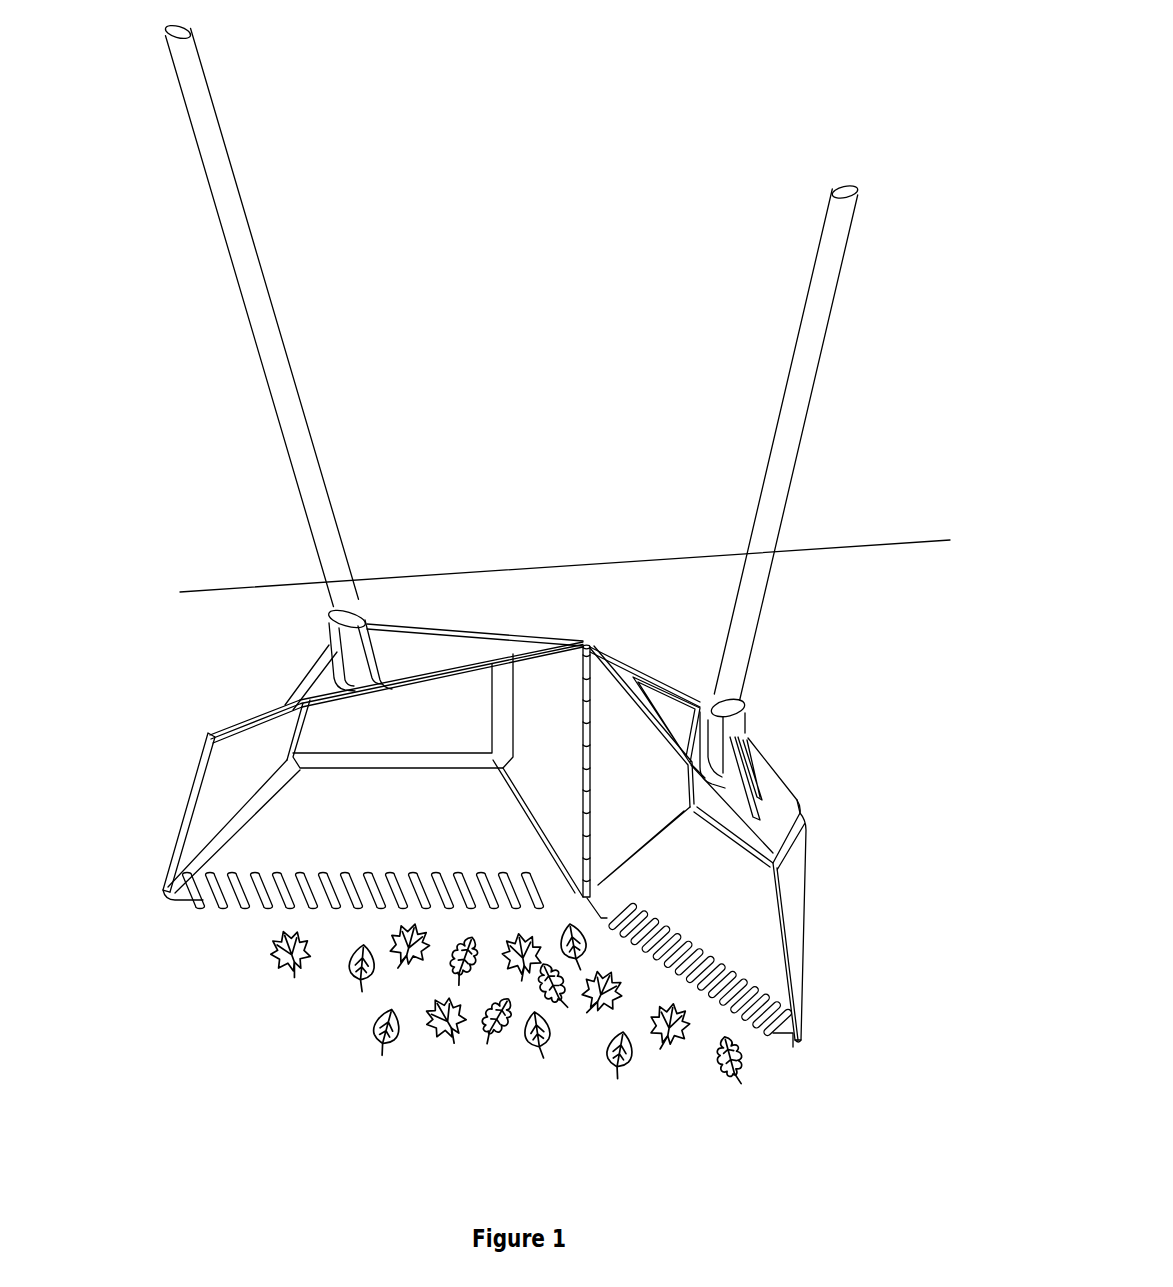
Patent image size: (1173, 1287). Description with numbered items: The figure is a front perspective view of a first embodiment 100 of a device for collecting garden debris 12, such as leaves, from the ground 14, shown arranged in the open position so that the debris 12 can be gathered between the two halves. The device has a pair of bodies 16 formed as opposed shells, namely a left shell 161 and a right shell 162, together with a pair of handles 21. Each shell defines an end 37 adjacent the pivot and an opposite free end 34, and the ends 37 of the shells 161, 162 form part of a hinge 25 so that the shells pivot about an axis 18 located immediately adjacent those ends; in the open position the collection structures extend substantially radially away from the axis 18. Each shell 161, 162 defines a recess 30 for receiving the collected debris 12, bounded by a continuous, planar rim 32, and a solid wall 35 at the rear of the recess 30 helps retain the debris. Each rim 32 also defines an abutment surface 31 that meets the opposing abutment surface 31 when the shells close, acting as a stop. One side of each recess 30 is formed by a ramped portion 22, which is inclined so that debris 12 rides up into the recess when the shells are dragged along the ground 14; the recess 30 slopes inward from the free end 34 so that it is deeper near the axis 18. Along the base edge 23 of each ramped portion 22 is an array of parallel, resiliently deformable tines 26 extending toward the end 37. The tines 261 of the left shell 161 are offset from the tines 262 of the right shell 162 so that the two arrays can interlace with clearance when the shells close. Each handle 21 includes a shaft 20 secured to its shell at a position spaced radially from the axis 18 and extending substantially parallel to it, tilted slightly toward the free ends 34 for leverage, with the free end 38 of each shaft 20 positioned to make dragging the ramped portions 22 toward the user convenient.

The first embodiment 100 is at (523, 586).
The garden debris 12 is at (388, 1032).
The ground 14 is at (762, 693).
The bodies 16 is at (528, 642).
The left shell 161 is at (292, 703).
The right shell 162 is at (781, 793).
The axis 18 is at (586, 645).
The shaft 20 is at (527, 361).
The handle 21 is at (527, 361).
The ramped portion 22 is at (343, 836).
The base edge 23 is at (496, 1012).
The hinge 25 is at (636, 678).
The tines 26 is at (763, 1032).
The tines of the left body 261 is at (218, 902).
The tines of the right body 262 is at (703, 993).
The recess 30 is at (447, 822).
The abutment surface 31 is at (367, 657).
The rim 32 is at (218, 724).
The free end 34 is at (172, 856).
The solid wall 35 is at (449, 731).
The end 37 is at (594, 680).
The free end of shaft 38 is at (182, 33).